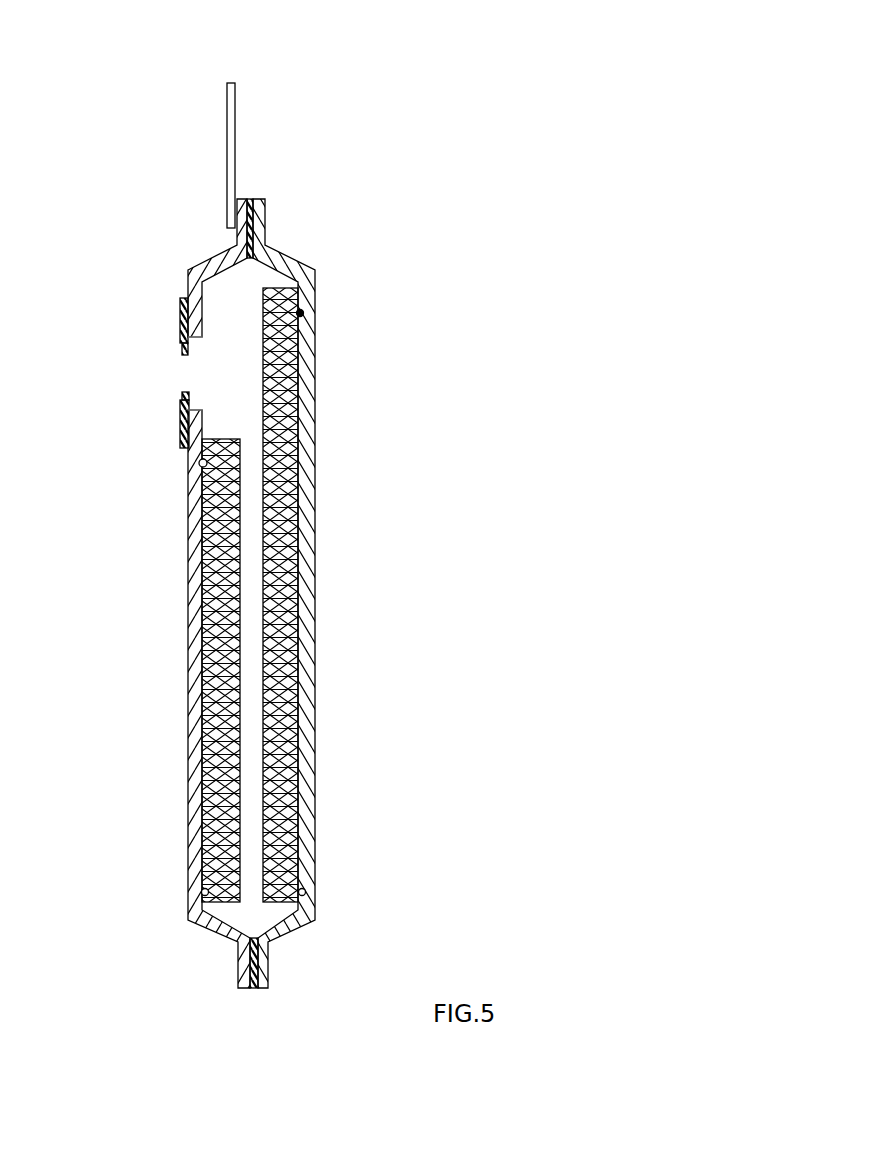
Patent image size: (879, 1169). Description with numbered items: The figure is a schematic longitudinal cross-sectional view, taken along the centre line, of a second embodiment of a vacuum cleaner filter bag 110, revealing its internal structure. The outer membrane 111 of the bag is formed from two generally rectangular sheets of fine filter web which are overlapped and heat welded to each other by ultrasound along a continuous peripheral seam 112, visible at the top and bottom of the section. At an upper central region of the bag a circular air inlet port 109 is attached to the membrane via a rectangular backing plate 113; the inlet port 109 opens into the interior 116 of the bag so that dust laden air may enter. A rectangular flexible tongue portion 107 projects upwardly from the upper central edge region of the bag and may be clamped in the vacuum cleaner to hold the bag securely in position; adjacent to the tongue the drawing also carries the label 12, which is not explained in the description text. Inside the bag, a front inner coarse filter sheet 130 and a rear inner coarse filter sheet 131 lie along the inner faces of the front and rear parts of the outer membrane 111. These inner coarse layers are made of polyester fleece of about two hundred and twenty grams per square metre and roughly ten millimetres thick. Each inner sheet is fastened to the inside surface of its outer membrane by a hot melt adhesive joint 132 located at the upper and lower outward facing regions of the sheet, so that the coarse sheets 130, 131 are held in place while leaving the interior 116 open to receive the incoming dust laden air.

The vacuum cleaner filter bag 110 is at (380, 90).
The flexible tongue portion 107 is at (230, 138).
The top terminal 12 is at (250, 216).
The backing plate 113 is at (182, 300).
The air inlet port 109 is at (183, 349).
The interior 116 is at (253, 384).
The rear inner coarse filter sheet 131 is at (282, 378).
The front inner coarse filter sheet 130 is at (218, 537).
The outer membrane 111 is at (310, 488).
The hot melt adhesive joint 132 is at (302, 312).
The peripheral seam 112 is at (250, 963).